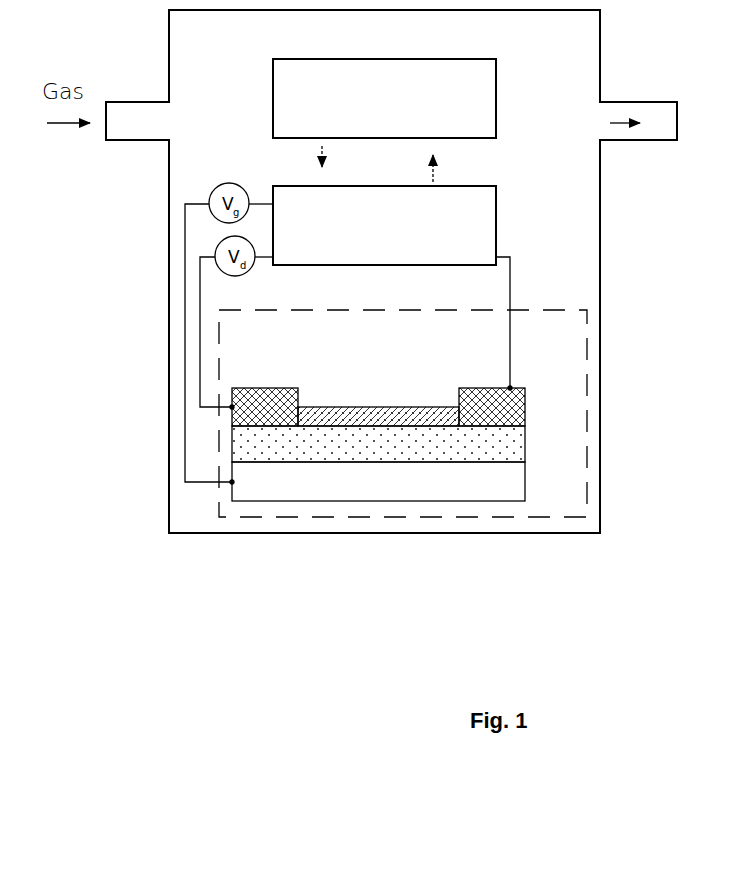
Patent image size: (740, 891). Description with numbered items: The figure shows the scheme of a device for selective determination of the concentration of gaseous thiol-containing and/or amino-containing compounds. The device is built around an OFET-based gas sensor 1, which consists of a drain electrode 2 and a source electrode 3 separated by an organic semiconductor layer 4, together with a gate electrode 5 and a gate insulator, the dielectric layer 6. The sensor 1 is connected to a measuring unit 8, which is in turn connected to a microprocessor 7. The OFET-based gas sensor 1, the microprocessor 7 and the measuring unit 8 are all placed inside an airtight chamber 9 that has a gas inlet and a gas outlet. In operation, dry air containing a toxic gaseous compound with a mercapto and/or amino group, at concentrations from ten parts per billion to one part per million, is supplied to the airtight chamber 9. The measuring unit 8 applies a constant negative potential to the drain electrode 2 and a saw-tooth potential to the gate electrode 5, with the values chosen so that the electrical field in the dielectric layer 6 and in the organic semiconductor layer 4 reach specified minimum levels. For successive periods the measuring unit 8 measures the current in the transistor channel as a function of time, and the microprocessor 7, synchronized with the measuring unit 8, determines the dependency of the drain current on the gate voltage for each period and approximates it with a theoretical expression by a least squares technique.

The OFET-based gas sensor 1 is at (468, 366).
The drain electrode 2 is at (525, 412).
The source electrode 3 is at (275, 388).
The organic semiconductor layer 4 is at (335, 407).
The gate electrode 5 is at (520, 485).
The dielectric layer 6 is at (525, 447).
The microprocessor 7 is at (376, 110).
The measuring unit 8 is at (375, 239).
The airtight chamber 9 is at (200, 48).